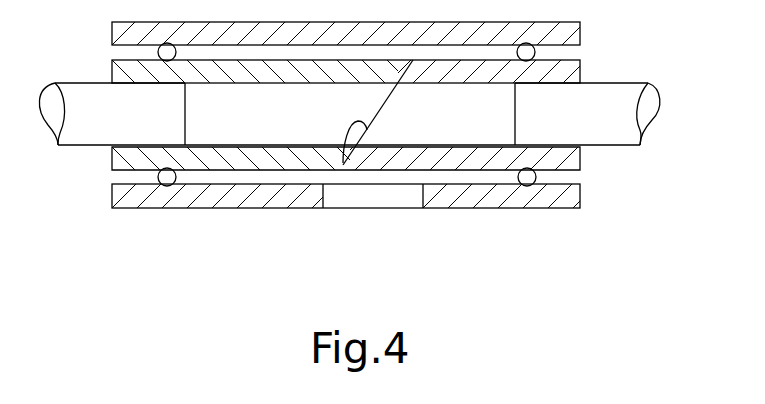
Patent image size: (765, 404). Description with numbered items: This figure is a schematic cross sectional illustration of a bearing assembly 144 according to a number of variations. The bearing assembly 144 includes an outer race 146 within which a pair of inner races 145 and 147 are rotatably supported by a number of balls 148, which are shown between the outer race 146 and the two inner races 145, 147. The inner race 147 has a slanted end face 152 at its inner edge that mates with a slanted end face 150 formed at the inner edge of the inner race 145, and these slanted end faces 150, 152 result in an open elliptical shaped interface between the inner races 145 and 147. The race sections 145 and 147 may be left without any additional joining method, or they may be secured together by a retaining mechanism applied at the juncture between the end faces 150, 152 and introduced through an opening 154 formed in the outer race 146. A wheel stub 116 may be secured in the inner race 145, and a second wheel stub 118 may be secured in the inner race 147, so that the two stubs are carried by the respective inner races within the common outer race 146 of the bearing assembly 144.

The wheel stub 116 is at (95, 127).
The wheel stub 118 is at (591, 98).
The bearing assembly 144 is at (663, 190).
The inner race 145 is at (243, 160).
The outer race 146 is at (572, 200).
The inner race 147 is at (465, 160).
The balls 148 is at (167, 186).
The slanted end face 150 is at (380, 113).
The slanted end face 152 is at (343, 163).
The opening 154 is at (322, 202).